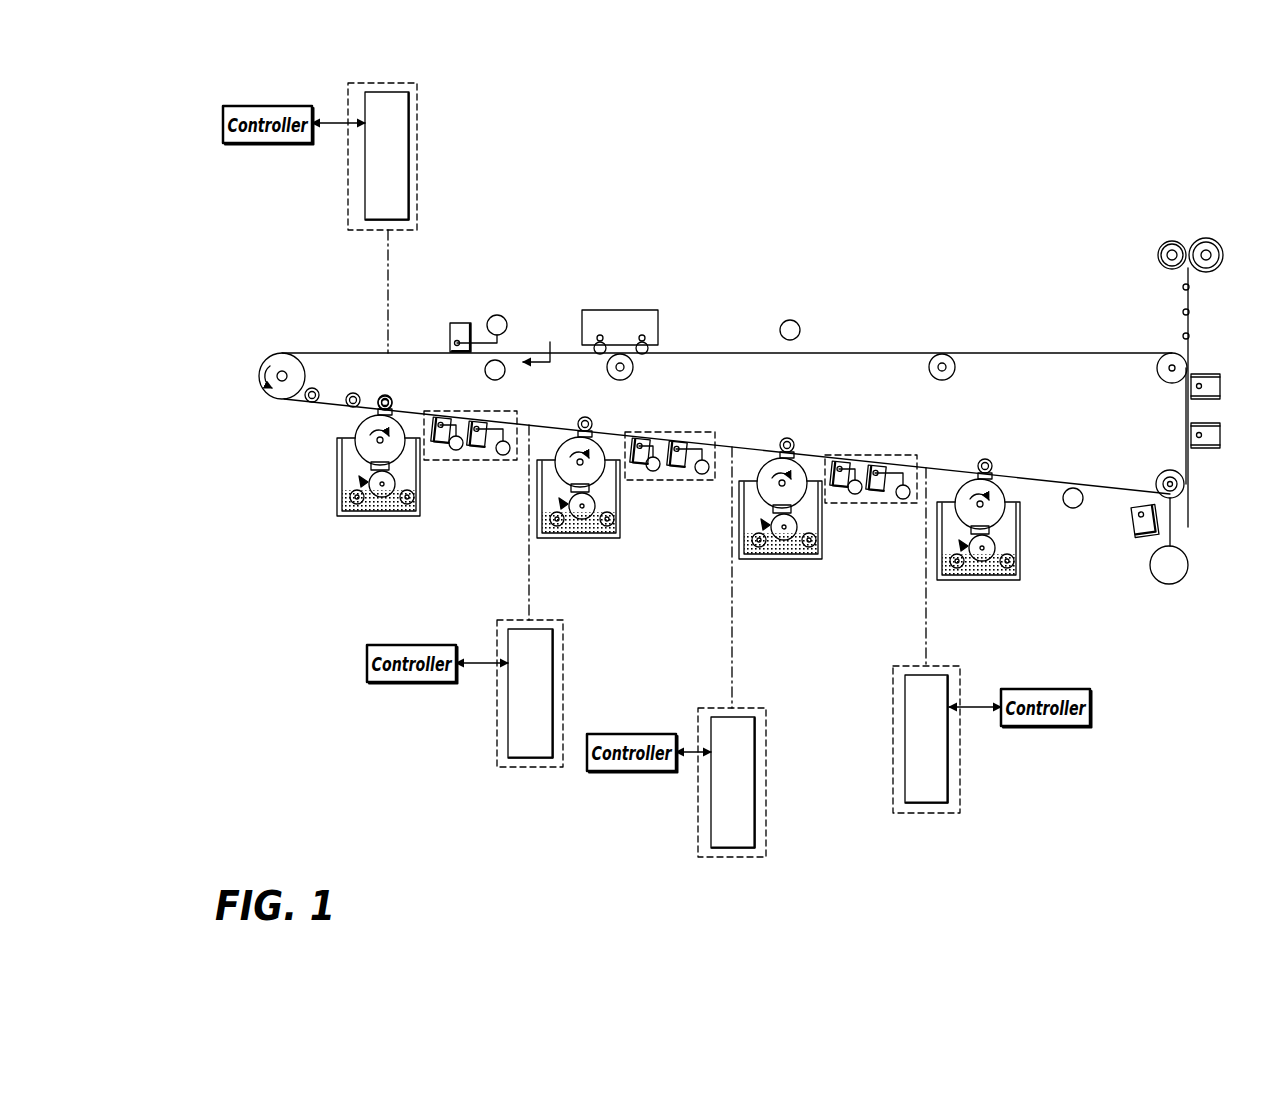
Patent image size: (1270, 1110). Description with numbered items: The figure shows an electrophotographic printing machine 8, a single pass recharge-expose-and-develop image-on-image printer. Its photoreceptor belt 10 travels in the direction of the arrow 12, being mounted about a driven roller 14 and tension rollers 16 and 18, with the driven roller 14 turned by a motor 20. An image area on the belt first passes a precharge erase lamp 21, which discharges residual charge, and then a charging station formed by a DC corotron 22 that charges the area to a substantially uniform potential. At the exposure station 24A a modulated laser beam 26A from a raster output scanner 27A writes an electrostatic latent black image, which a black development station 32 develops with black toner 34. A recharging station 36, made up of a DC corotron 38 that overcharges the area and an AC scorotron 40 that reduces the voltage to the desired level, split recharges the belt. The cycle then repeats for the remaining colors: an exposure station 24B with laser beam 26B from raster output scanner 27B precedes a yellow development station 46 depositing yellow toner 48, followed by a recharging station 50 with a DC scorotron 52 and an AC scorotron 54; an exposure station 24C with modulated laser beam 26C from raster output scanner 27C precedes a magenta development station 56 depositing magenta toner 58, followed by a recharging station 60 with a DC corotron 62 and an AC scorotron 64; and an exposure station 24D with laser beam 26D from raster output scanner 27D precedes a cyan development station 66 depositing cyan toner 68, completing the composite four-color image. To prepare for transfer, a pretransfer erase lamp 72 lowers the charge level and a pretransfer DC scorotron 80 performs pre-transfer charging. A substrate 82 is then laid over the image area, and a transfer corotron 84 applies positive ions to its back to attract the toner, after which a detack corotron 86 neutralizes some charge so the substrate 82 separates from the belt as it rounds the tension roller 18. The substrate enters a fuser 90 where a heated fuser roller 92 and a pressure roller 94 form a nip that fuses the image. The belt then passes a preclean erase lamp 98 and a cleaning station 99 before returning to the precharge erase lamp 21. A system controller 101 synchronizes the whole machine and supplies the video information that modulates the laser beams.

The electrophotographic printing machine 8 is at (922, 122).
The photoreceptor belt 10 is at (903, 352).
The direction of belt travel 12 is at (541, 339).
The driven roller 14 is at (1186, 492).
The tension roller 16 is at (279, 366).
The tension roller 18 is at (1168, 360).
The motor 20 is at (1182, 578).
The precharge erase lamp 21 is at (500, 361).
The DC corotron 22 is at (459, 323).
The exposure station 24A is at (415, 146).
The exposure station 24B is at (561, 677).
The exposure station 24C is at (758, 761).
The exposure station 24D is at (896, 730).
The modulated laser beam 26A is at (387, 270).
The laser beam 26B is at (528, 590).
The modulated laser beam 26C is at (731, 642).
The laser beam 26D is at (925, 616).
The raster output scanner 27A is at (410, 157).
The raster output scanner 27B is at (555, 696).
The raster output scanner 27C is at (757, 785).
The raster output scanner 27D is at (905, 741).
The black development station 32 is at (386, 518).
The black toner 34 is at (369, 508).
The recharging station 36 is at (463, 412).
The DC corotron 38 is at (436, 417).
The AC scorotron 40 is at (483, 432).
The yellow development station 46 is at (582, 538).
The yellow toner 48 is at (570, 528).
The recharging station 50 is at (668, 433).
The DC scorotron 52 is at (638, 438).
The AC scorotron 54 is at (687, 443).
The magenta development station 56 is at (786, 560).
The magenta toner 58 is at (778, 548).
The recharging station 60 is at (867, 456).
The DC corotron 62 is at (836, 460).
The AC scorotron 64 is at (886, 466).
The cyan development station 66 is at (978, 582).
The cyan toner 68 is at (965, 570).
The pretransfer erase lamp 72 is at (1073, 508).
The pretransfer DC scorotron 80 is at (1142, 537).
The substrate 82 is at (1190, 515).
The transfer corotron 84 is at (1220, 438).
The detack corotron 86 is at (1220, 374).
The fuser 90 is at (1192, 211).
The heated fuser roller 92 is at (1158, 255).
The pressure roller 94 is at (1223, 254).
The preclean erase lamp 98 is at (792, 320).
The cleaning station 99 is at (605, 310).
The system controller 101 is at (242, 106).